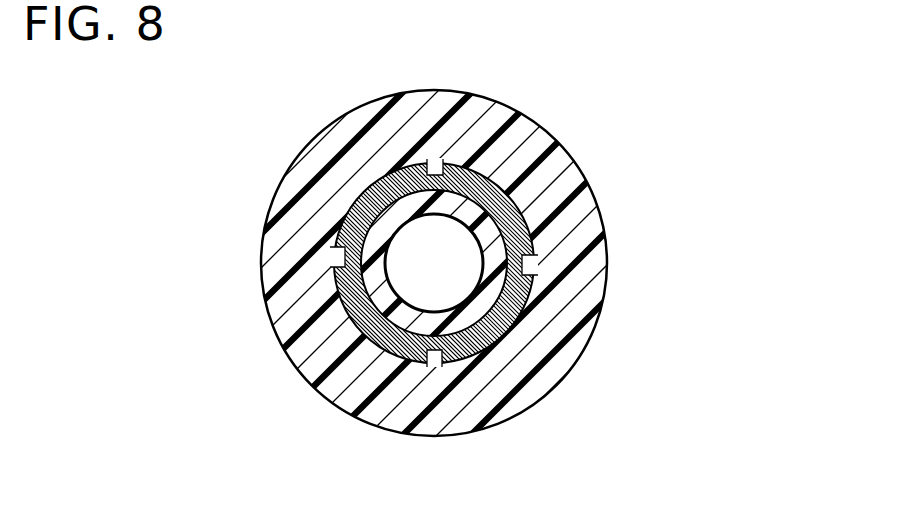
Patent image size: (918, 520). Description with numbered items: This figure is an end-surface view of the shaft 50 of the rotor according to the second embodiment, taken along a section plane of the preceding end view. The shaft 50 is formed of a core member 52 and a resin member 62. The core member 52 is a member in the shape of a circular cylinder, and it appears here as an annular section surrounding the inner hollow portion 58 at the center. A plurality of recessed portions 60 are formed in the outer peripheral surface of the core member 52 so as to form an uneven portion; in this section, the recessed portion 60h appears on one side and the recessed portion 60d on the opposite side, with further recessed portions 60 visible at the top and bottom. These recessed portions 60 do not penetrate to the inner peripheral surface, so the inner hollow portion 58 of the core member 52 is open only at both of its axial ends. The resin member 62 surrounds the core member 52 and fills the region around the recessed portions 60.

The shaft 50 is at (648, 106).
The core member 52 is at (388, 168).
The inner hollow portion 58 is at (450, 275).
The recessed portions 60 is at (435, 168).
The recessed portion 60h is at (340, 257).
The recessed portion 60d is at (528, 264).
The resin member 62 is at (446, 156).